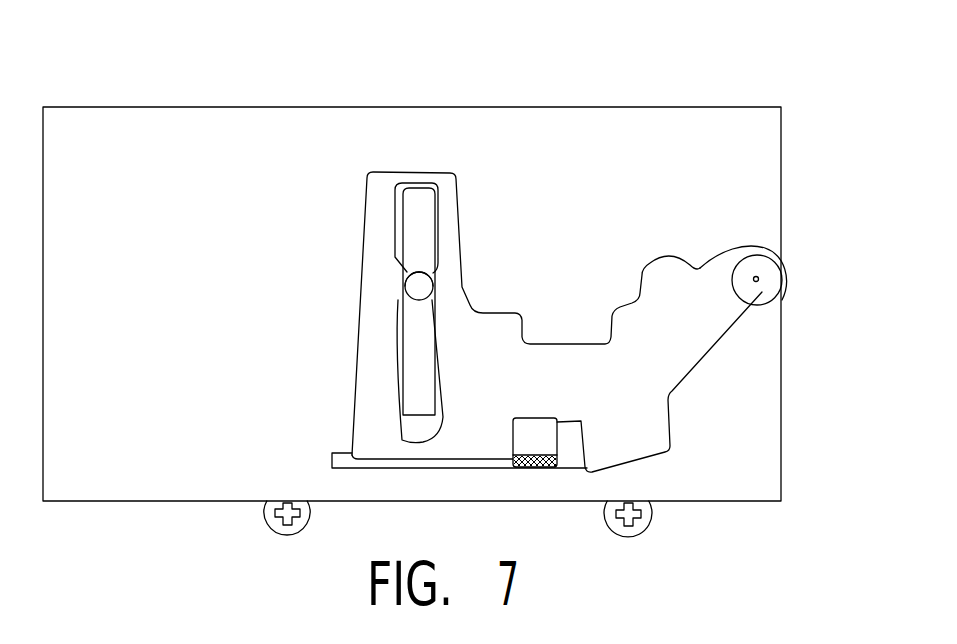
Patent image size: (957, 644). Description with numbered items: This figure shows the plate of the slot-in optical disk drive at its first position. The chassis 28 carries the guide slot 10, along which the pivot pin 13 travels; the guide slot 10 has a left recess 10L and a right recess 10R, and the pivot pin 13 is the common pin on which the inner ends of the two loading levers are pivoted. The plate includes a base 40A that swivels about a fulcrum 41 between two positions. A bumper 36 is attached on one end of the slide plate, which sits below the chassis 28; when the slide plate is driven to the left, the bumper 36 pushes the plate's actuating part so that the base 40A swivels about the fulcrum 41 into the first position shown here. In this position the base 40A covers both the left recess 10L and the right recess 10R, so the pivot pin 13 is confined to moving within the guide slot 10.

The guide slot 10 is at (413, 202).
The left recess 10L is at (398, 287).
The right recess 10R is at (442, 283).
The pivot pin 13 is at (418, 287).
The chassis 28 is at (668, 160).
The bumper 36 is at (540, 438).
The base 40A is at (700, 266).
The fulcrum 41 is at (758, 282).